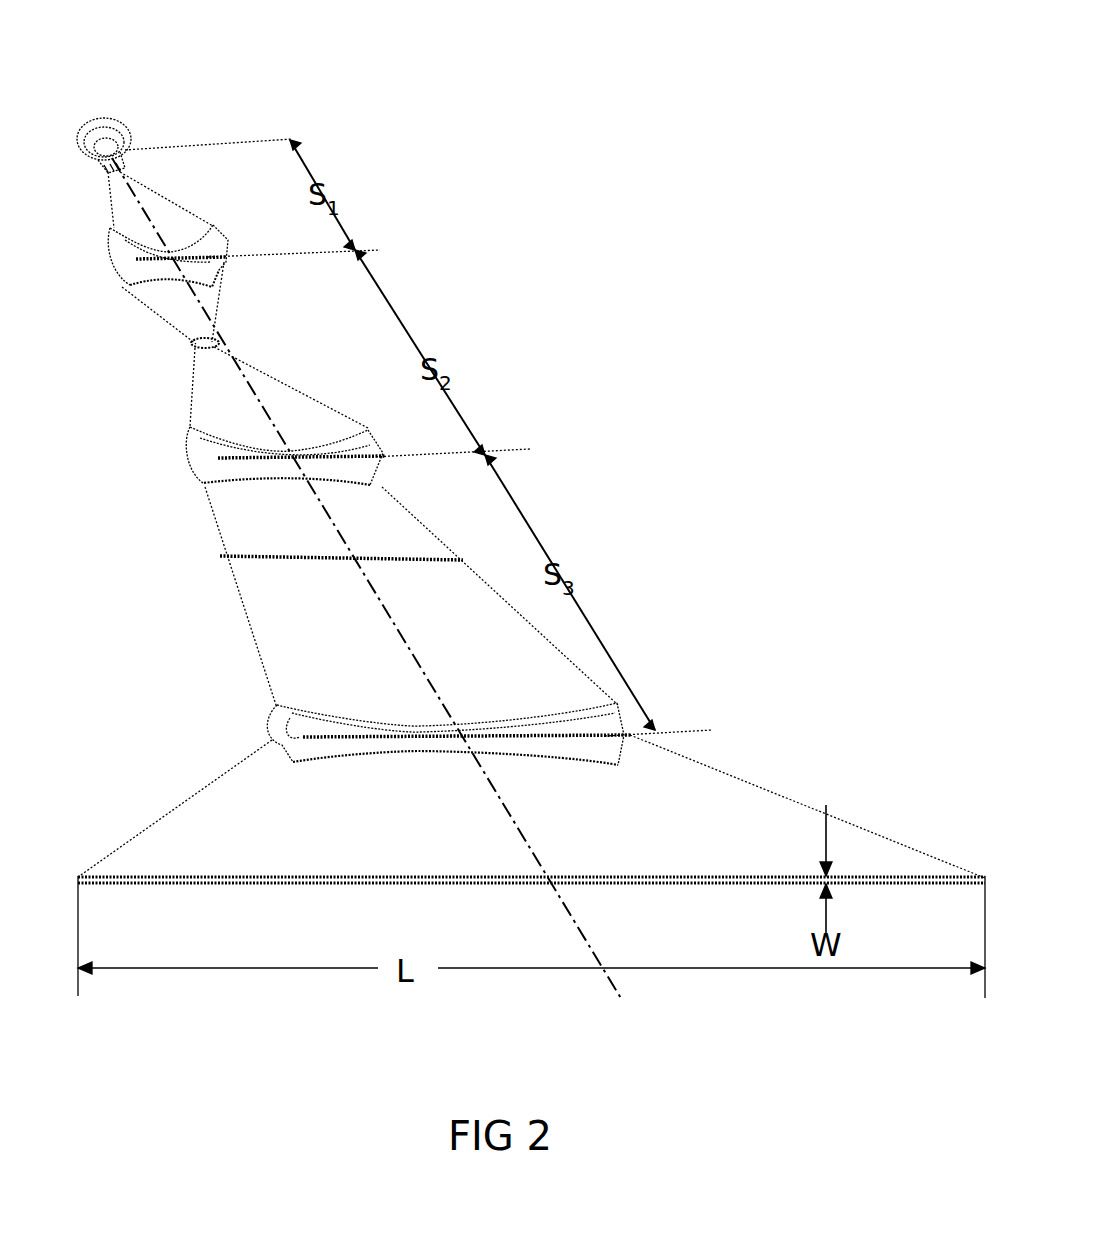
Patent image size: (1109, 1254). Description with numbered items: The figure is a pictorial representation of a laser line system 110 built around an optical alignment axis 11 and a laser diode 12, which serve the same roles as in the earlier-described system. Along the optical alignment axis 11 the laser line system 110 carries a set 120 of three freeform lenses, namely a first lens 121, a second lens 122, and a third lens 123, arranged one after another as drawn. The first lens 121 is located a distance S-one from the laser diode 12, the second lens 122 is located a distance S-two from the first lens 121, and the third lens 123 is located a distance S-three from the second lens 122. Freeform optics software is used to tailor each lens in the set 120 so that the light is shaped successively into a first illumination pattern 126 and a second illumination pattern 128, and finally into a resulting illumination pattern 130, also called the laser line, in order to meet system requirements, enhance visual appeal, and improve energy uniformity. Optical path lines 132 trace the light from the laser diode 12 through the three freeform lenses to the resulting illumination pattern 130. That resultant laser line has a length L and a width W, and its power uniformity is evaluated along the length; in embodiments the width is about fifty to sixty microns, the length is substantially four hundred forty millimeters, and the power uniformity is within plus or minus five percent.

The optical alignment axis 11 is at (540, 851).
The laser diode 12 is at (120, 122).
The laser line system 110 is at (818, 70).
The set of three freeform lenses 120 is at (774, 285).
The first lens 121 is at (213, 247).
The second lens 122 is at (373, 445).
The third lens 123 is at (268, 714).
The first illumination pattern 126 is at (197, 343).
The second illumination pattern 128 is at (377, 567).
The resulting illumination pattern 130 is at (400, 878).
The optical path lines 132 is at (438, 523).